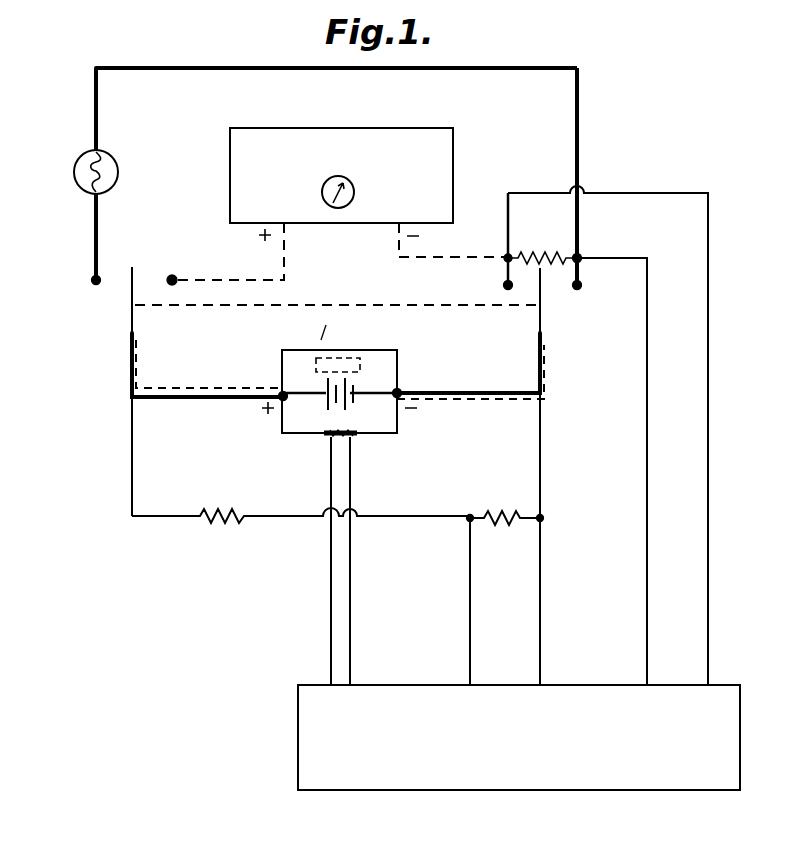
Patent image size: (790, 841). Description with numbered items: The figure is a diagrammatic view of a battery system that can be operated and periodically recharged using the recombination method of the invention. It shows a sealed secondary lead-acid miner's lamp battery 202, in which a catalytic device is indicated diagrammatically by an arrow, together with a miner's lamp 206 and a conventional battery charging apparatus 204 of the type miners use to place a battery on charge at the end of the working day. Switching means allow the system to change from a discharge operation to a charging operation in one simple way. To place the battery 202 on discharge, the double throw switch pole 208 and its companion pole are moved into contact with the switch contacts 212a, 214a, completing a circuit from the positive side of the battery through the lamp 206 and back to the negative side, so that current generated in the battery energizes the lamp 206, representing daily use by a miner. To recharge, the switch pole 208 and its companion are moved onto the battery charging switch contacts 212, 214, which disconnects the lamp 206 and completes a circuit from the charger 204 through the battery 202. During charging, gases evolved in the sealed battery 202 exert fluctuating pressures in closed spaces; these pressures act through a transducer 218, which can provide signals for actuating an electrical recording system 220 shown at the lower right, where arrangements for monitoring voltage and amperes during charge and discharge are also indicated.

The miner's lamp battery 202 is at (382, 372).
The battery charging apparatus 204 is at (440, 163).
The miner's lamp 206 is at (107, 165).
The double throw switch pole 208 is at (132, 292).
The battery charging switch contact 212 is at (177, 277).
The switch contact 212a is at (92, 282).
The battery charging switch contact 214 is at (540, 292).
The switch contact 214a is at (504, 285).
The transducer 218 is at (357, 438).
The electrical recording system 220 is at (562, 780).